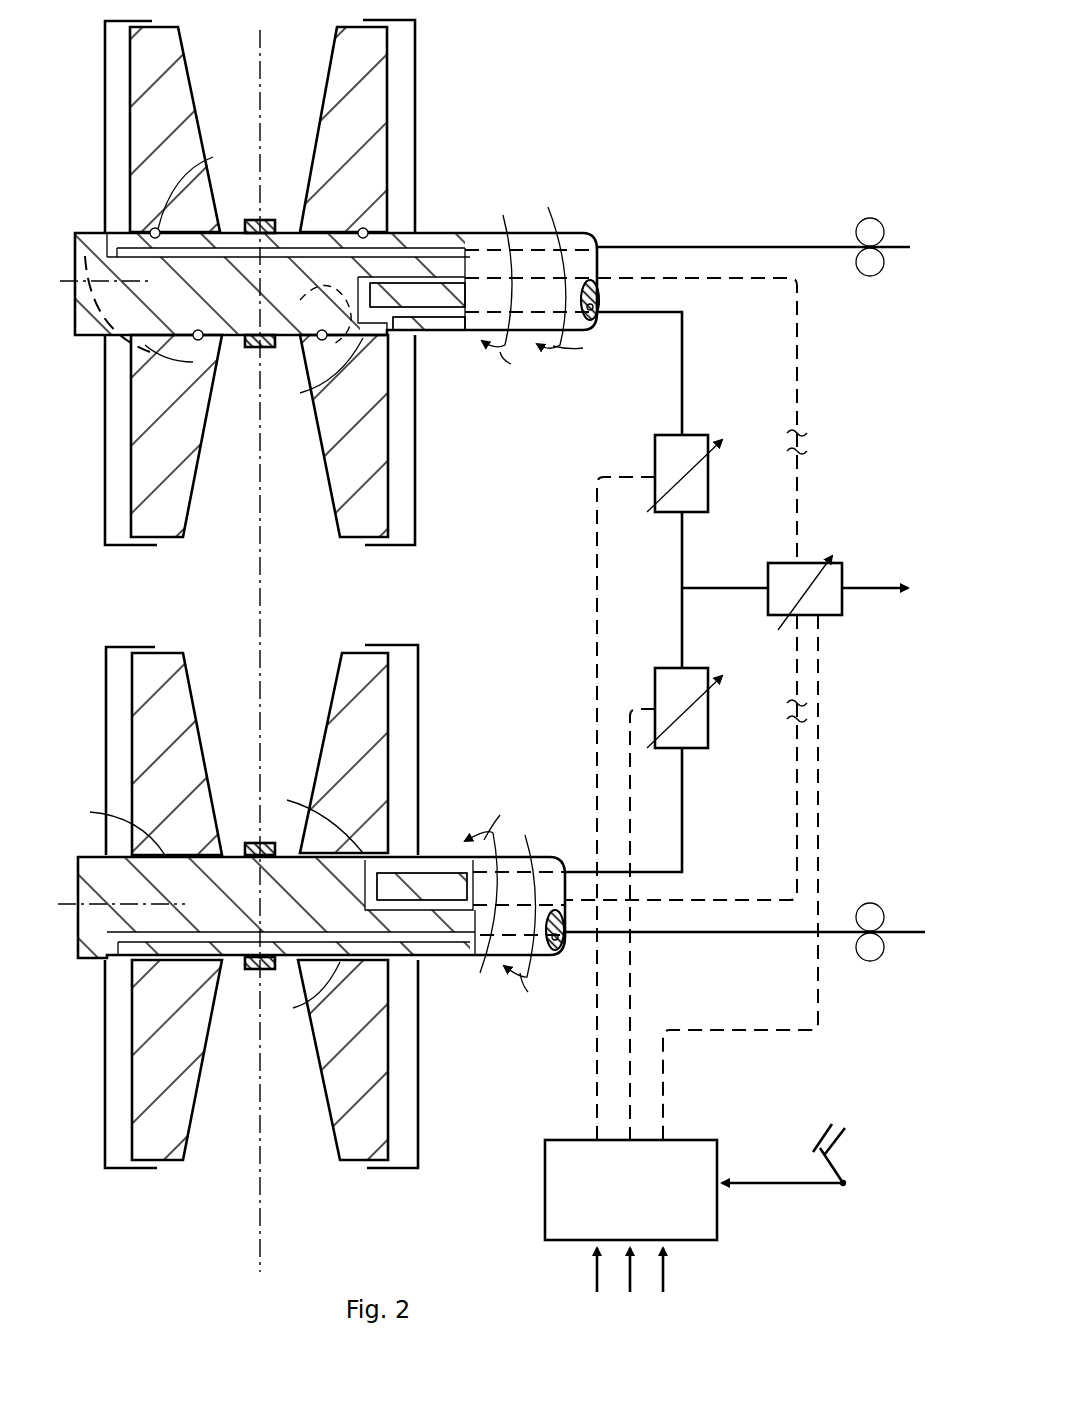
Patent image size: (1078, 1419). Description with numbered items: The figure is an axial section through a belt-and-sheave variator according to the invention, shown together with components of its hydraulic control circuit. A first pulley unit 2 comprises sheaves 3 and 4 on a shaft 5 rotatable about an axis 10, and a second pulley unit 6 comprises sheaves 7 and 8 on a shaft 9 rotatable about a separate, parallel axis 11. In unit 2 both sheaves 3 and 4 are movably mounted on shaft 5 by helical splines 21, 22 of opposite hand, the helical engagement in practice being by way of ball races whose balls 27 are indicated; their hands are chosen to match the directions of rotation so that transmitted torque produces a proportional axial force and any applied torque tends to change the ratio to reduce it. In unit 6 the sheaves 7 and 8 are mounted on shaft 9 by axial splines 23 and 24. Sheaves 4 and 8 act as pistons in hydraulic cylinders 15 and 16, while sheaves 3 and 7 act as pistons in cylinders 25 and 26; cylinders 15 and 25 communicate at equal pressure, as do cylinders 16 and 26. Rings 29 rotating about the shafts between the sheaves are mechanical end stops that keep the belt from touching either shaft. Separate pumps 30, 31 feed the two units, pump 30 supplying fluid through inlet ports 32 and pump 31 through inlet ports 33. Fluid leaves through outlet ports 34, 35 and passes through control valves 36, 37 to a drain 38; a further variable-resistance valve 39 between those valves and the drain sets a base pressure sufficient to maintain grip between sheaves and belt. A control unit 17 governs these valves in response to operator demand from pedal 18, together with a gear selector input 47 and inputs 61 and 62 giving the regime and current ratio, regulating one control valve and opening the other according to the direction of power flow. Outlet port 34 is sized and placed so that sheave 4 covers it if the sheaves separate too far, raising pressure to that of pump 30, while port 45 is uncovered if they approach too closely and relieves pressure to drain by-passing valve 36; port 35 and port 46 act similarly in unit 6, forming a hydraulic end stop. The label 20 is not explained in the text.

The first pulley unit 2 is at (440, 436).
The sheave 3 is at (183, 68).
The sheave 4 is at (342, 60).
The shaft 5 is at (465, 231).
The second pulley unit 6 is at (440, 1051).
The sheave 7 is at (340, 1128).
The sheave 8 is at (178, 1154).
The shaft 9 is at (445, 855).
The axis 10 is at (84, 259).
The axis 11 is at (70, 900).
The hydraulic cylinder 15 is at (405, 65).
The hydraulic cylinder 16 is at (120, 1154).
The control unit 17 is at (690, 1139).
The control member 18 is at (846, 1158).
The axis 20 is at (263, 1235).
The helical spline 21 is at (112, 374).
The helical spline 22 is at (308, 338).
The axial spline 23 is at (293, 1008).
The axial spline 24 is at (110, 751).
The cylinder 25 is at (120, 75).
The cylinder 26 is at (418, 1125).
The balls 27 is at (213, 157).
The rings 29 is at (267, 220).
The pump 30 is at (870, 277).
The pump 31 is at (870, 962).
The inlet ports 32 is at (110, 232).
The inlet ports 33 is at (108, 962).
The outlet port 34 is at (400, 338).
The outlet port 35 is at (407, 853).
The control valve 36 is at (698, 434).
The control valve 37 is at (710, 712).
The drain 38 is at (875, 597).
The variable-resistance valve 39 is at (845, 574).
The port 45 is at (300, 393).
The port 46 is at (315, 815).
The gear selector input 47 is at (628, 1283).
The input 61 is at (597, 1278).
The input 62 is at (666, 1269).